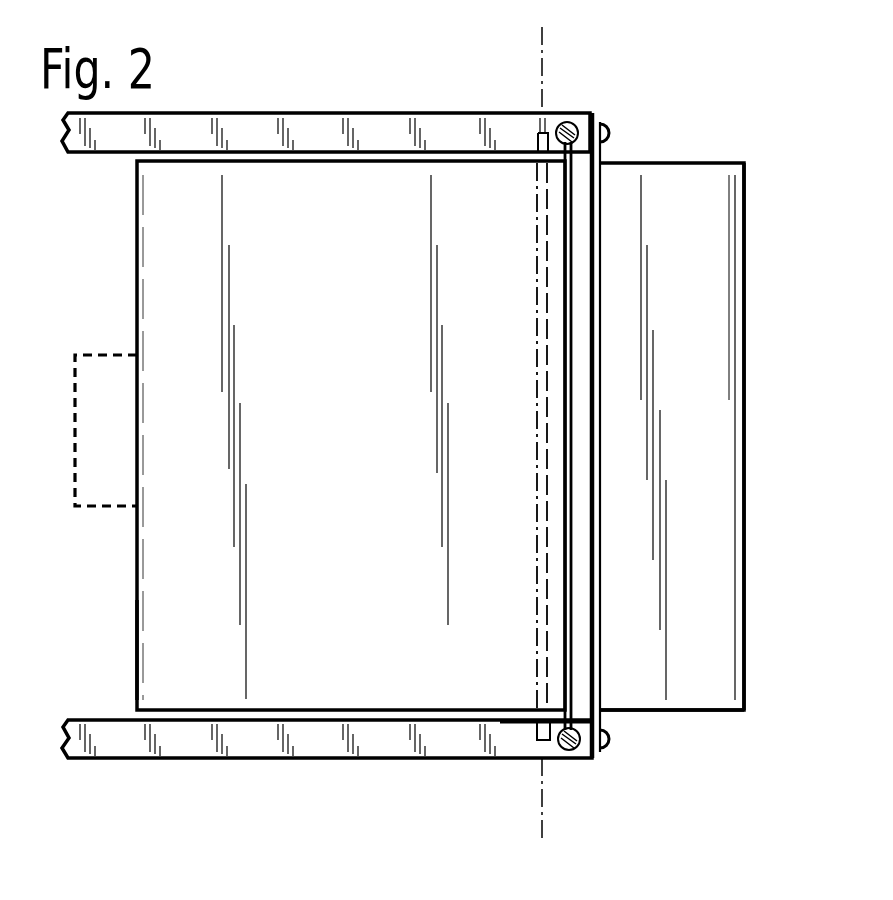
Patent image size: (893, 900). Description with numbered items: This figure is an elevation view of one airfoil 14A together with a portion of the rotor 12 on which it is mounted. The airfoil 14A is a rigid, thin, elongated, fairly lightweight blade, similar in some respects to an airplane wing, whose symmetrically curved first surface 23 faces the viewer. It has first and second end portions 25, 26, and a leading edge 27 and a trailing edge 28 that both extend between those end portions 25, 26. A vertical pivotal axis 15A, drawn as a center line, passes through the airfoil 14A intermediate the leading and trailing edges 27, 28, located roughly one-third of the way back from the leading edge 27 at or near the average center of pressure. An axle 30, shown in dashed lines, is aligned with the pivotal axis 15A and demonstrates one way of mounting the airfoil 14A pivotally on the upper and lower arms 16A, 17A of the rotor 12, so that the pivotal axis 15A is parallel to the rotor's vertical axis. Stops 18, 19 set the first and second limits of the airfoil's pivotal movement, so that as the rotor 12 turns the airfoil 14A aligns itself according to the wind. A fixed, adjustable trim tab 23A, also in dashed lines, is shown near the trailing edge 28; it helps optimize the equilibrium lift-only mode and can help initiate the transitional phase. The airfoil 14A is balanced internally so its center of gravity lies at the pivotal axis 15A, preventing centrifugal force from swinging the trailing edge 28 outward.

The rotor 12 is at (590, 115).
The airfoil 14A is at (348, 206).
The pivotal axis 15A is at (540, 40).
The arm 16A is at (428, 126).
The arm 17A is at (470, 752).
The stop 18 is at (590, 150).
The stop 19 is at (573, 197).
The first surface 23 is at (170, 222).
The trim tab 23A is at (103, 352).
The first end portion 25 is at (717, 163).
The second end portion 26 is at (650, 712).
The leading edge 27 is at (745, 685).
The trailing edge 28 is at (137, 641).
The axle 30 is at (540, 130).